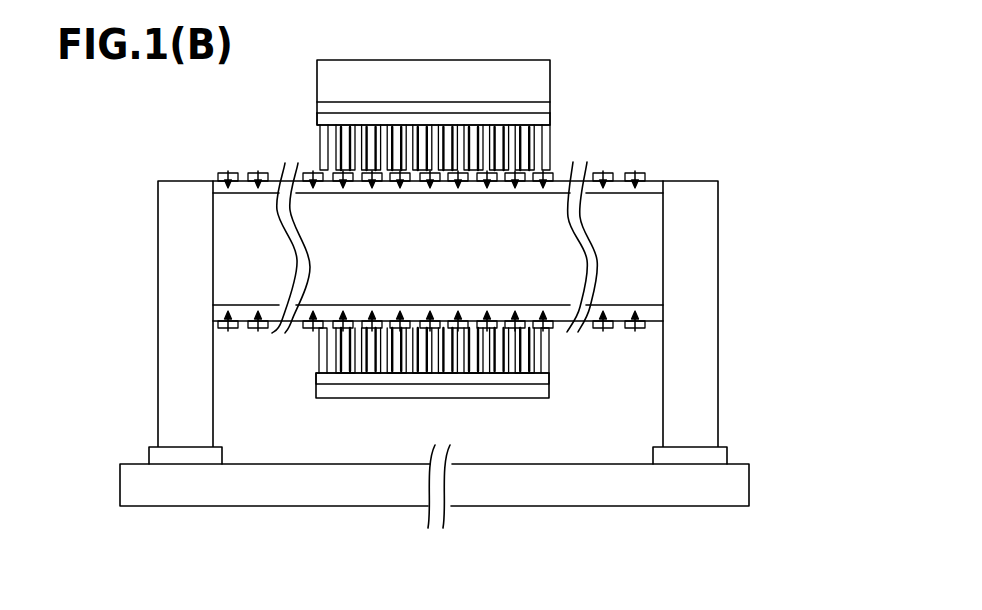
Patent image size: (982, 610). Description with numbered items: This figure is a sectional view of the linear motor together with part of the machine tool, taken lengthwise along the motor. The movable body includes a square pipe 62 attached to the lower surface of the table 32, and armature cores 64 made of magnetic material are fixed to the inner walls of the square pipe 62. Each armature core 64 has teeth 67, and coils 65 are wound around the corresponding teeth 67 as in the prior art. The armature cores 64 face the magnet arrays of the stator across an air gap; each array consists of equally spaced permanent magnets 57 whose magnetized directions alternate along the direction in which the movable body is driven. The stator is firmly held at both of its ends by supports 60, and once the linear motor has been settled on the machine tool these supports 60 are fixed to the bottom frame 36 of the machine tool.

The table 32 is at (403, 70).
The bottom frame 36 is at (490, 490).
The permanent magnets 57 is at (635, 180).
The supports 60 is at (177, 288).
The square pipe 62 is at (540, 110).
The armature cores 64 is at (318, 120).
The coils 65 is at (543, 142).
The teeth 67 is at (330, 138).